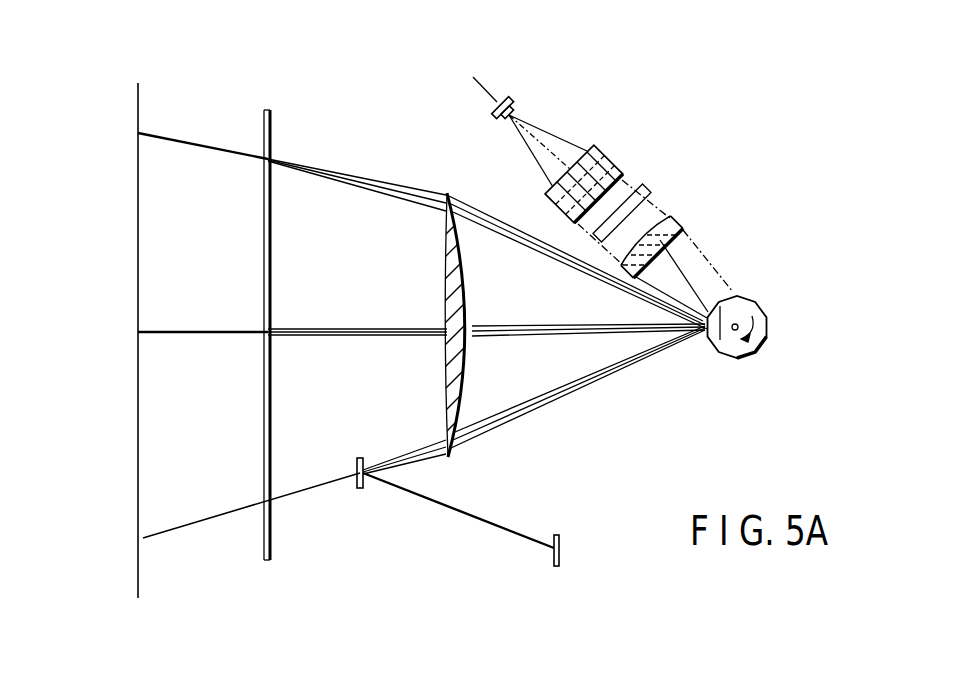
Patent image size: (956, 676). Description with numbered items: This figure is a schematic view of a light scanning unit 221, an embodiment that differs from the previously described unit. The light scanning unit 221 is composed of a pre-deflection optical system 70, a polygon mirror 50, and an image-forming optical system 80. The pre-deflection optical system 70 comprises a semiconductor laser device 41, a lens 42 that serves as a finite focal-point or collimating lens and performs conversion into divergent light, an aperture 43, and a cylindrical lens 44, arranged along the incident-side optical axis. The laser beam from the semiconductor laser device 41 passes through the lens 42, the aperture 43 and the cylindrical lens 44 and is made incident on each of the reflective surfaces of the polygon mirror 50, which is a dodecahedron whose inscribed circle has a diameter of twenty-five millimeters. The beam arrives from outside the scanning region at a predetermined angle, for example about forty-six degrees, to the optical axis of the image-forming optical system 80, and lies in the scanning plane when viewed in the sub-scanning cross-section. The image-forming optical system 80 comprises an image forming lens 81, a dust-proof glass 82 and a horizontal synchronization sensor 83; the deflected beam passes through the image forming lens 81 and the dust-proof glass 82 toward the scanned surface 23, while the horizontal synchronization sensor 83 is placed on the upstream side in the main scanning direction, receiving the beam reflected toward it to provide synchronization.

The light scanning unit 221 is at (410, 96).
The image plane 23 is at (139, 591).
The semiconductor laser device 41 is at (512, 97).
The lens 42 is at (605, 152).
The aperture 43 is at (632, 195).
The cylindrical lens 44 is at (668, 213).
The polygon mirror 50 is at (738, 360).
The pre-deflection optical system 70 is at (548, 23).
The image-forming optical system 80 is at (468, 561).
The image forming lens 81 is at (445, 380).
The dust-proof glass 82 is at (272, 413).
The horizontal synchronization sensor 83 is at (560, 543).